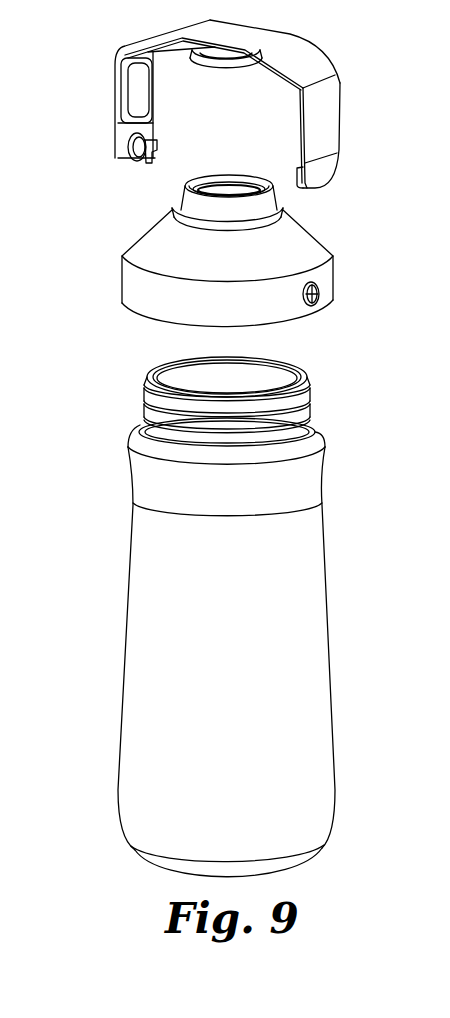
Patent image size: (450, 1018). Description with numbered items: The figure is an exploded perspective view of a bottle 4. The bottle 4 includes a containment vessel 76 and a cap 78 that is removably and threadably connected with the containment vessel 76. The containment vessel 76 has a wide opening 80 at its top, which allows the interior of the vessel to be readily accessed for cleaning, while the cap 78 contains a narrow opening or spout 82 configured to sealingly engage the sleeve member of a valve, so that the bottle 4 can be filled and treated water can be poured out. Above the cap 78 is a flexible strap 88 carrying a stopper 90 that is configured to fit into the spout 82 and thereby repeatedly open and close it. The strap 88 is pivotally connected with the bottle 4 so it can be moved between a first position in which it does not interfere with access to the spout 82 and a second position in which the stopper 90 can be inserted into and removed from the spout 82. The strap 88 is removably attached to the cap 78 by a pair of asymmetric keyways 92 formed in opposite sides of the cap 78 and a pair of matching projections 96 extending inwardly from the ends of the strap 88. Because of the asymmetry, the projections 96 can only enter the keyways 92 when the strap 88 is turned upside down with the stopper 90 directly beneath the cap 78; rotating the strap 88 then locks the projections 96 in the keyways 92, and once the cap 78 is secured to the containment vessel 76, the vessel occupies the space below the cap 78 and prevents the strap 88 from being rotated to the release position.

The bottle 4 is at (352, 45).
The containment vessel 76 is at (137, 637).
The cap 78 is at (145, 242).
The wide opening 80 is at (277, 377).
The spout 82 is at (234, 182).
The flexible strap 88 is at (330, 98).
The stopper 90 is at (218, 70).
The asymmetric keyways 92 is at (320, 291).
The projections 96 is at (127, 155).